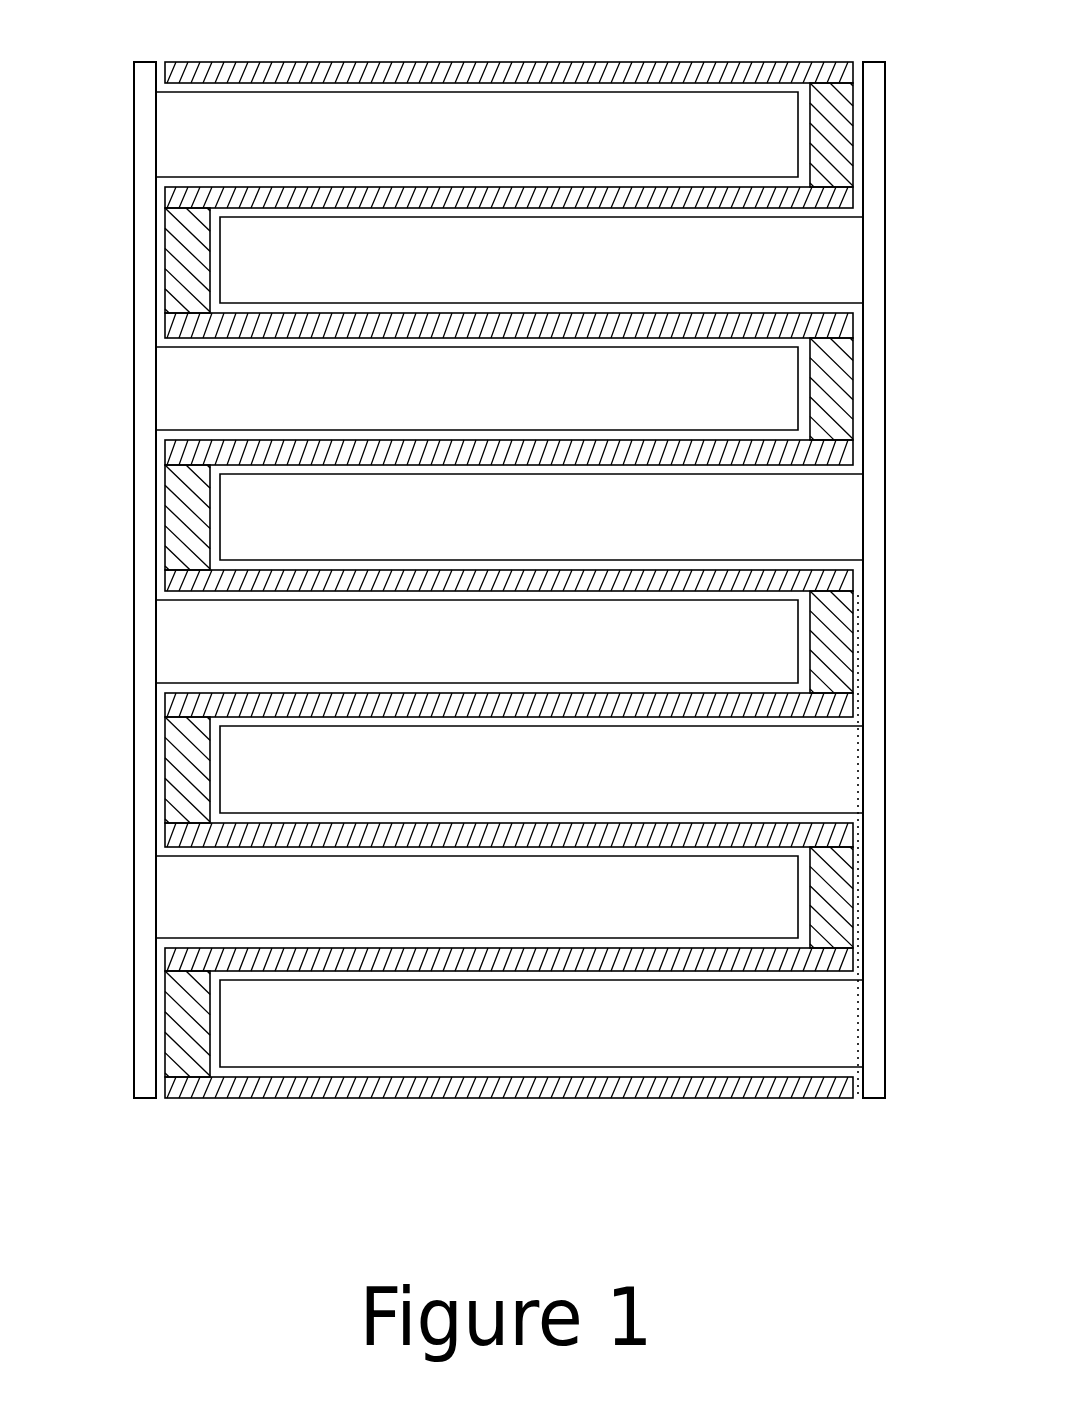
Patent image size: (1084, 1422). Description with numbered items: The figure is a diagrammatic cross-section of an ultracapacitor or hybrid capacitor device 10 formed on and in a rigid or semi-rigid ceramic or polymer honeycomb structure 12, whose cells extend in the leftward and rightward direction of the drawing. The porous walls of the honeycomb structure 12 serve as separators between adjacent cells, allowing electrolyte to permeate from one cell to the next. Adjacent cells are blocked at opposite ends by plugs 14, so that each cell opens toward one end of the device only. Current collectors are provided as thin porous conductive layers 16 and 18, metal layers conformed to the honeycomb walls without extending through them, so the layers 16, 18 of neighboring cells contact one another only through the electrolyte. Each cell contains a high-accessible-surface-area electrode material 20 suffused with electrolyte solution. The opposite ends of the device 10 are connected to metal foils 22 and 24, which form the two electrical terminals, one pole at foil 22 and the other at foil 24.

The ultracapacitor device 10 is at (280, 1150).
The honeycomb structure 12 is at (793, 955).
The plugs 14 is at (180, 255).
The porous conductive layer 16 is at (858, 642).
The porous conductive layer 18 is at (162, 70).
The electrode material 20 is at (237, 778).
The metal foil 22 is at (145, 527).
The metal foil 24 is at (872, 273).